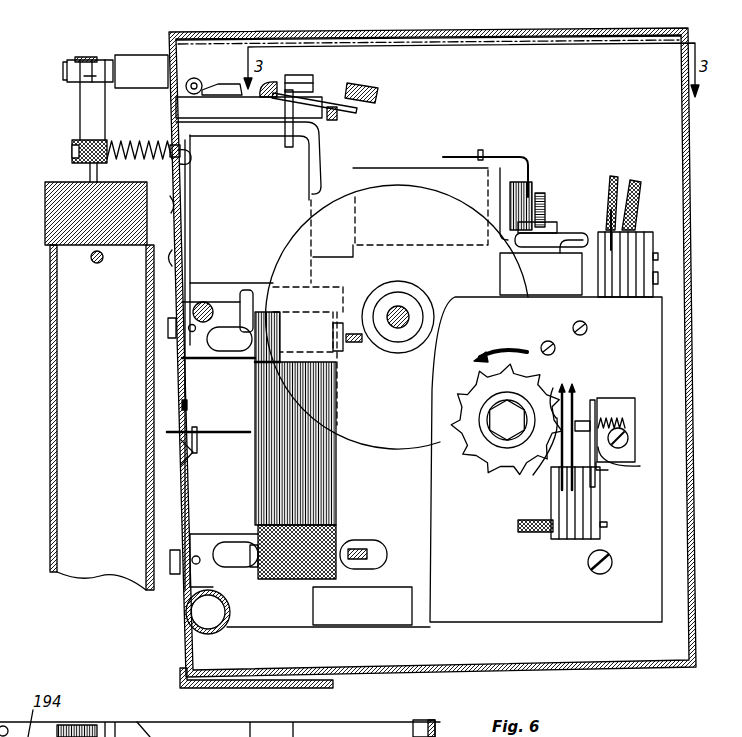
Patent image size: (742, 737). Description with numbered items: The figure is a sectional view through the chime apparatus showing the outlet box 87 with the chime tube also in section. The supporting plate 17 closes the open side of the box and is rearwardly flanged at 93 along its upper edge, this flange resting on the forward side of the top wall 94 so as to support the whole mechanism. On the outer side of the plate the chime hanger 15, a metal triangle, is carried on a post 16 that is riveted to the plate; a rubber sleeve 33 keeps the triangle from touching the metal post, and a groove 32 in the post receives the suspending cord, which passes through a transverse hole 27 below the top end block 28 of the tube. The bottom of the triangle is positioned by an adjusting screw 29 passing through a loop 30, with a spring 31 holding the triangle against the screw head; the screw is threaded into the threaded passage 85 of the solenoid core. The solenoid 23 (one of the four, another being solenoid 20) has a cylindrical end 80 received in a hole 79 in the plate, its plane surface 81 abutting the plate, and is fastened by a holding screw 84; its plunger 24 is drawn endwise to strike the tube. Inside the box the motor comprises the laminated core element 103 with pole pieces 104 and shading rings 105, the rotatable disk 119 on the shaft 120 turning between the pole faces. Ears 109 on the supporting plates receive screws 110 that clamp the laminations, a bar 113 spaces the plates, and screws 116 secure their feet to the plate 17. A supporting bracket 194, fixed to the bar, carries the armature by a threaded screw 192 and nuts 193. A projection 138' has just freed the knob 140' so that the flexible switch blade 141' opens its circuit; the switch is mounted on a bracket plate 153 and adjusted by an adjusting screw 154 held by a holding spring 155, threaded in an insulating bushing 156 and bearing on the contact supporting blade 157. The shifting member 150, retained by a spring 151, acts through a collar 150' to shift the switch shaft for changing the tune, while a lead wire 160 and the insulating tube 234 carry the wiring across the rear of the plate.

The rearward flange 93 is at (205, 32).
The top wall 94 is at (246, 37).
The lead wire 160 is at (238, 688).
The outlet box 87 is at (561, 46).
The top end block 28 is at (46, 232).
The transverse hole 27 is at (99, 264).
The plunger 24 is at (92, 60).
The rubber sleeve 33 is at (66, 67).
The groove 32 is at (87, 78).
The post 16 is at (137, 80).
The chime hanger 15 is at (80, 108).
The loop 30 is at (85, 138).
The adjusting screw 29 is at (74, 160).
The spring 31 is at (155, 140).
The threaded passage 85 is at (186, 160).
The holding screw 84 is at (170, 206).
The plane surface 81 is at (186, 189).
The cylindrical end 80 is at (179, 222).
The solenoid 23 is at (316, 135).
The bar 113 is at (205, 302).
The shading ring 105 is at (249, 294).
The rotatable disk 119 is at (438, 208).
The shaft 120 is at (406, 310).
The laminated core element 103 is at (337, 494).
The threaded screw 192 is at (541, 212).
The nut 193 is at (561, 247).
The supporting bracket 194 is at (577, 232).
The pole piece 104 is at (496, 607).
The knob 140' is at (506, 425).
The projection 138' is at (570, 425).
The flexible switch blade 141' is at (599, 403).
The bracket plate 153 is at (622, 406).
The adjusting screw 154 is at (622, 421).
The holding spring 155 is at (603, 447).
The insulating bushing 156 is at (628, 464).
The contact supporting blade 157 is at (605, 472).
The screw 110 is at (252, 546).
The ear 109 is at (346, 545).
The insulating tube 234 is at (232, 612).
The hole 79 is at (171, 253).
The screw 116 is at (172, 339).
The supporting plate 17 is at (177, 383).
The collar 150' is at (207, 406).
The shifting member 150 is at (208, 446).
The spring 151 is at (180, 456).
The solenoid 20 is at (150, 736).